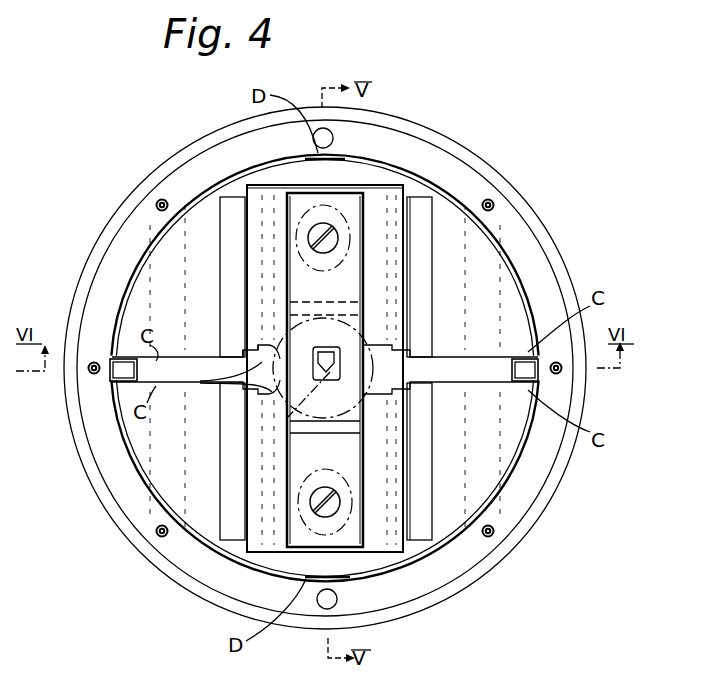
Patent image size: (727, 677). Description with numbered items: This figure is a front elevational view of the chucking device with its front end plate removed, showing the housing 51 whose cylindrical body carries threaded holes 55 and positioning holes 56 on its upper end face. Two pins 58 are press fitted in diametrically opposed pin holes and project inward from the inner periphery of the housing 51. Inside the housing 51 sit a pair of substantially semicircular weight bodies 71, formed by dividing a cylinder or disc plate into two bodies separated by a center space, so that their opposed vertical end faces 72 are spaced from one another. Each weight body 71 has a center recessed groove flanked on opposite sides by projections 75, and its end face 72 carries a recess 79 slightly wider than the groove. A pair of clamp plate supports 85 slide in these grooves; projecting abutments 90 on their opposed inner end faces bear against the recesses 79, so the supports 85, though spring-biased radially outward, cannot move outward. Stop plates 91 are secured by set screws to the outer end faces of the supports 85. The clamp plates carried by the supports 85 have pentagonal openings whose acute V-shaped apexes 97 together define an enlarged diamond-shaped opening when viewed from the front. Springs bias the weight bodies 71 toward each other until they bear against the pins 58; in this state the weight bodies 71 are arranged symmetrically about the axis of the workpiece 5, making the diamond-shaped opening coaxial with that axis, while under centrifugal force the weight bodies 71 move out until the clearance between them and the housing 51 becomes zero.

The workpiece 5 is at (312, 350).
The housing 51 is at (201, 577).
The threaded holes 55 is at (156, 535).
The positioning holes 56 is at (337, 599).
The pins 58 is at (532, 372).
The weight bodies 71 is at (507, 302).
The end faces 72 is at (446, 357).
The projections 75 is at (412, 292).
The recesses 79 is at (226, 382).
The clamp plate supports 85 is at (256, 276).
The projecting abutments 90 is at (240, 350).
The stop plates 91 is at (384, 189).
The V-shaped apex 97 is at (291, 408).